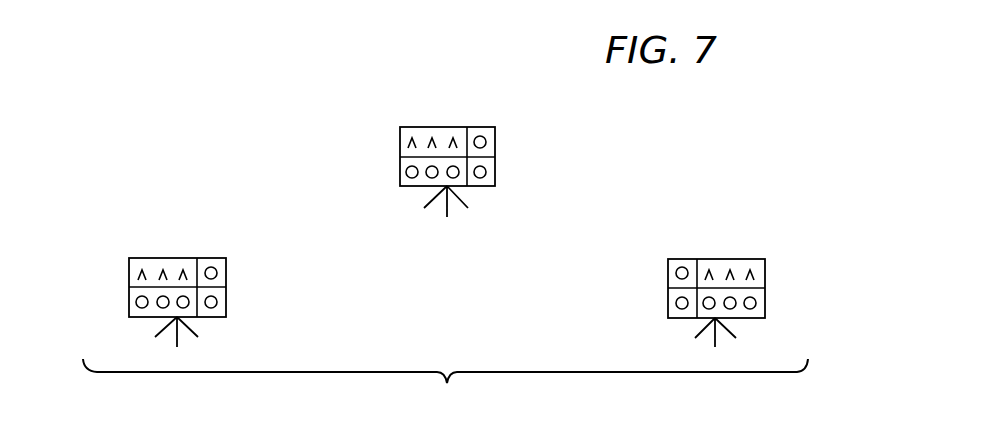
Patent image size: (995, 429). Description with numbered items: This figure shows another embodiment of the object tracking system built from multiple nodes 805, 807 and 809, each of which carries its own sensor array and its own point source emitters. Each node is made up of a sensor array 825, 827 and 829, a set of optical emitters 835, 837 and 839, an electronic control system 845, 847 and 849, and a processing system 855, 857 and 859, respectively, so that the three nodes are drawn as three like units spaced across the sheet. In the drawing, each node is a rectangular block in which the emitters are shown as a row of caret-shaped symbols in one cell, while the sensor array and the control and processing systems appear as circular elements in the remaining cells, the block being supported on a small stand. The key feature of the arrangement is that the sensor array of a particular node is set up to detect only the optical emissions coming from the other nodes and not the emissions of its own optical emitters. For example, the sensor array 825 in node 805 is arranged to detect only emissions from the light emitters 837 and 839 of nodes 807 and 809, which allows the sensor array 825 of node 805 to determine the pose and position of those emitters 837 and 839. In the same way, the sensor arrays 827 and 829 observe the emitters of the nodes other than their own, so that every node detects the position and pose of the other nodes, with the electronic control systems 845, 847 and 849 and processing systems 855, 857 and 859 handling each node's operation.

The node 805 is at (159, 236).
The node 807 is at (420, 106).
The node 809 is at (692, 236).
The optical emitters 835 is at (130, 272).
The optical emitters 837 is at (400, 142).
The optical emitters 839 is at (762, 273).
The electronic control system 845 is at (225, 272).
The electronic control system 847 is at (494, 140).
The electronic control system 849 is at (669, 273).
The sensor array 825 is at (130, 302).
The sensor array 827 is at (400, 171).
The sensor array 829 is at (763, 303).
The processing system 855 is at (226, 302).
The processing system 857 is at (495, 171).
The processing system 859 is at (669, 303).